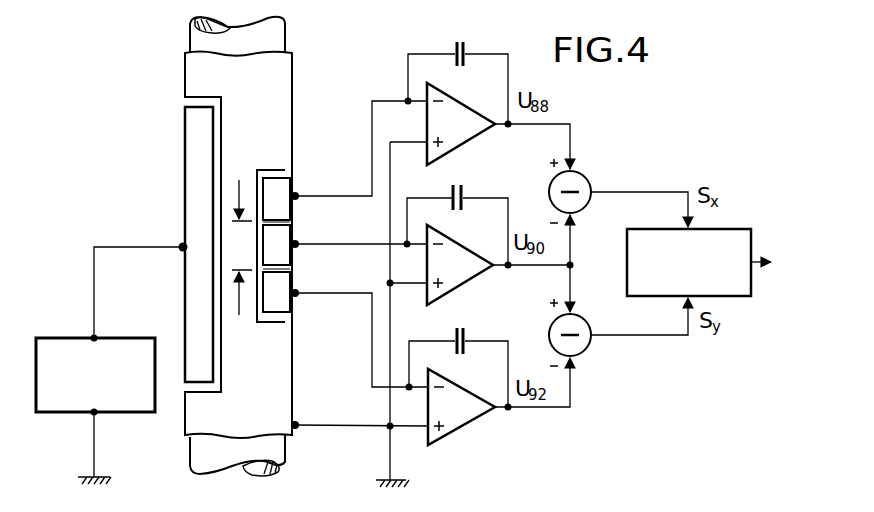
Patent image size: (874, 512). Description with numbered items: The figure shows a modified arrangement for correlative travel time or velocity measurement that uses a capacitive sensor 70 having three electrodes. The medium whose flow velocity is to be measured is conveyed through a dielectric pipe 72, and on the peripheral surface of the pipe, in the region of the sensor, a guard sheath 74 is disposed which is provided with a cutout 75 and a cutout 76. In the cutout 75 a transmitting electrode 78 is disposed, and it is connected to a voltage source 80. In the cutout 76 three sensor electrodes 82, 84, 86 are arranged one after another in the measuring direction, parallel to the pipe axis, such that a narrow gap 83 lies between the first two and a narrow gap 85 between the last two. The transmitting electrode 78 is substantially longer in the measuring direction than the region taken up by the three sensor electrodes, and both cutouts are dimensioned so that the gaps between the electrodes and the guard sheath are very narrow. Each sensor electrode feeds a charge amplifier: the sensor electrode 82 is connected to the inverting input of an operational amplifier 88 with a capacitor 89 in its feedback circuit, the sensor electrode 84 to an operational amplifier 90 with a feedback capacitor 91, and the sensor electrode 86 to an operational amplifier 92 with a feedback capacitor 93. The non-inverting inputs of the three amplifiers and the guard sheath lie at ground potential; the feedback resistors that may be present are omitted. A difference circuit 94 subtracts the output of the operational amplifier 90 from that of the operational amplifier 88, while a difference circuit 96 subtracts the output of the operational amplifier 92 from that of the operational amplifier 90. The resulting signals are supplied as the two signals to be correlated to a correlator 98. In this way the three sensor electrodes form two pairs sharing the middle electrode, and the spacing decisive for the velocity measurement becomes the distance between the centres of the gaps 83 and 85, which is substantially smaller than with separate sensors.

The capacitive sensor 70 is at (173, 163).
The dielectric pipe 72 is at (285, 37).
The guard sheath 74 is at (190, 80).
The cutout 75 is at (223, 114).
The cutout 76 is at (268, 167).
The transmitting electrode 78 is at (186, 213).
The voltage source 80 is at (62, 338).
The sensor electrode 82 is at (298, 178).
The gap 83 is at (296, 221).
The sensor electrode 84 is at (296, 236).
The gap 85 is at (296, 270).
The sensor electrode 86 is at (298, 302).
The operational amplifier 88 is at (465, 133).
The capacitor 89 is at (466, 64).
The operational amplifier 90 is at (468, 276).
The capacitor 91 is at (462, 206).
The operational amplifier 92 is at (460, 420).
The capacitor 93 is at (465, 349).
The difference circuit 94 is at (583, 180).
The difference circuit 96 is at (586, 348).
The correlator 98 is at (740, 229).